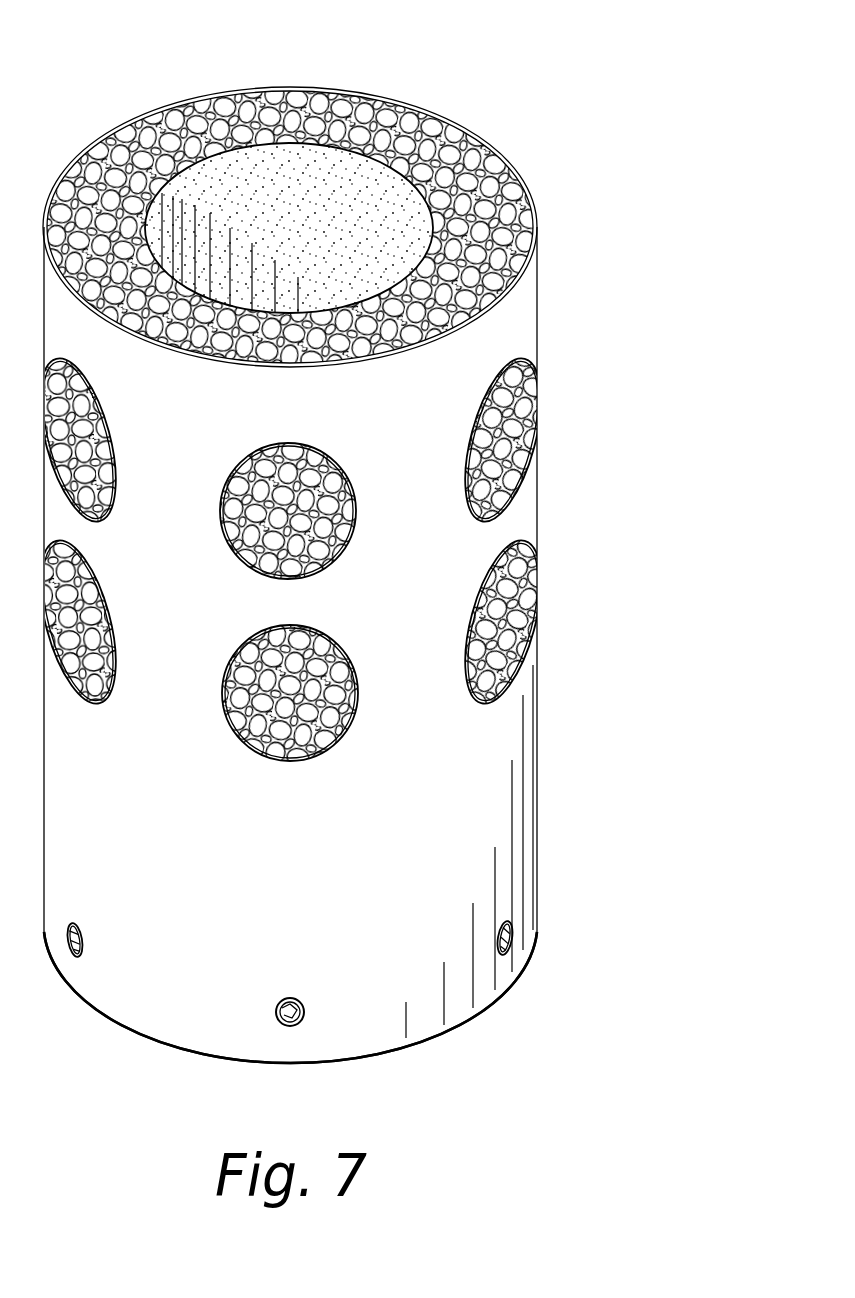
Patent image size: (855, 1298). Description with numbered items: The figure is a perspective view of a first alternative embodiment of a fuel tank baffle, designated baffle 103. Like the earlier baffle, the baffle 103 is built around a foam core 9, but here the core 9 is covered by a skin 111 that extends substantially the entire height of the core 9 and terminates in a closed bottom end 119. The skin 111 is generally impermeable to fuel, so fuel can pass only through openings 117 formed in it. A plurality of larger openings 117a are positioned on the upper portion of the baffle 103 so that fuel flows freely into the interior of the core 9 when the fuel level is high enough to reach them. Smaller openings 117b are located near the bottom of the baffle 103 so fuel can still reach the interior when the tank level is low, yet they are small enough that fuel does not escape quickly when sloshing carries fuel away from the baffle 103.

The foam core 9 is at (383, 122).
The baffle 103 is at (612, 132).
The skin 111 is at (537, 296).
The openings 117 is at (335, 456).
The larger openings 117a is at (346, 558).
The smaller openings 117b is at (83, 947).
The closed bottom end 119 is at (360, 1066).